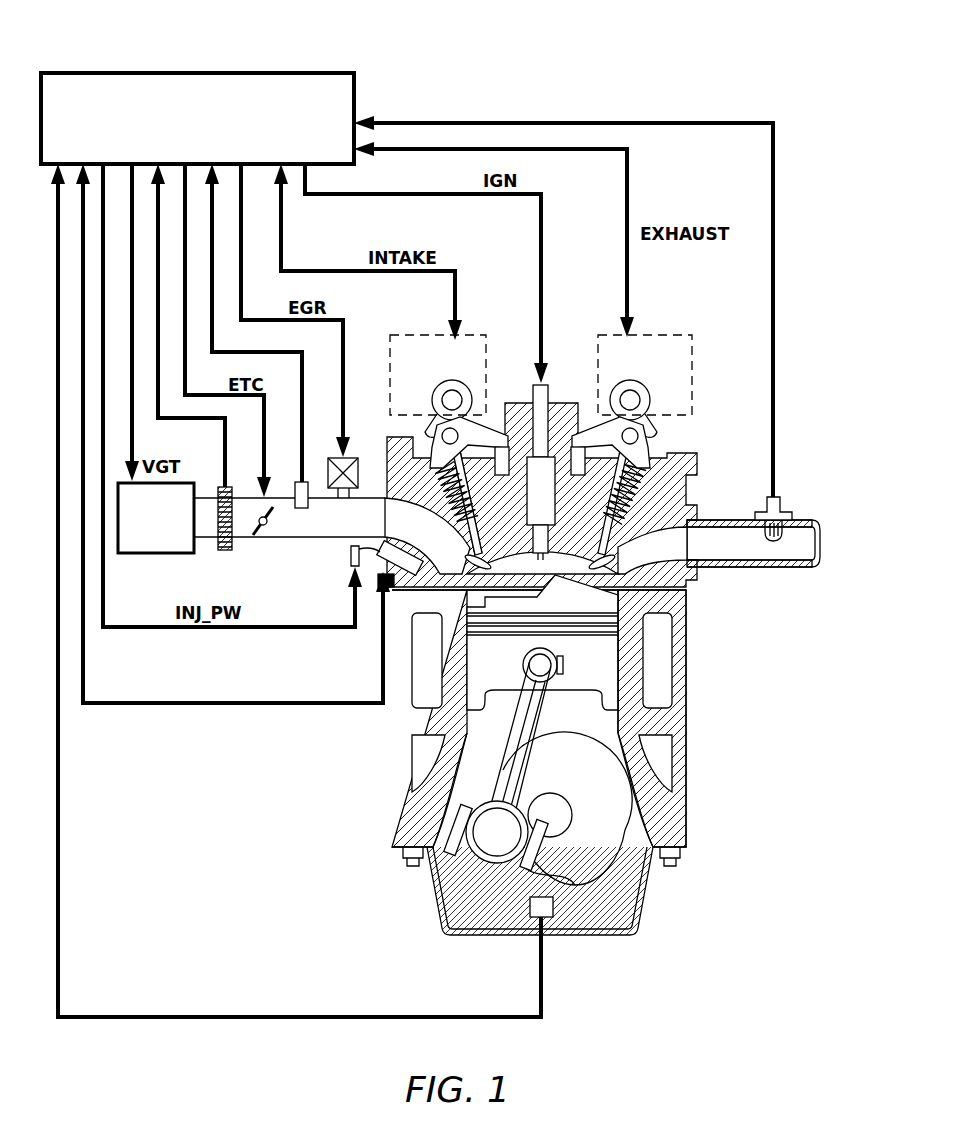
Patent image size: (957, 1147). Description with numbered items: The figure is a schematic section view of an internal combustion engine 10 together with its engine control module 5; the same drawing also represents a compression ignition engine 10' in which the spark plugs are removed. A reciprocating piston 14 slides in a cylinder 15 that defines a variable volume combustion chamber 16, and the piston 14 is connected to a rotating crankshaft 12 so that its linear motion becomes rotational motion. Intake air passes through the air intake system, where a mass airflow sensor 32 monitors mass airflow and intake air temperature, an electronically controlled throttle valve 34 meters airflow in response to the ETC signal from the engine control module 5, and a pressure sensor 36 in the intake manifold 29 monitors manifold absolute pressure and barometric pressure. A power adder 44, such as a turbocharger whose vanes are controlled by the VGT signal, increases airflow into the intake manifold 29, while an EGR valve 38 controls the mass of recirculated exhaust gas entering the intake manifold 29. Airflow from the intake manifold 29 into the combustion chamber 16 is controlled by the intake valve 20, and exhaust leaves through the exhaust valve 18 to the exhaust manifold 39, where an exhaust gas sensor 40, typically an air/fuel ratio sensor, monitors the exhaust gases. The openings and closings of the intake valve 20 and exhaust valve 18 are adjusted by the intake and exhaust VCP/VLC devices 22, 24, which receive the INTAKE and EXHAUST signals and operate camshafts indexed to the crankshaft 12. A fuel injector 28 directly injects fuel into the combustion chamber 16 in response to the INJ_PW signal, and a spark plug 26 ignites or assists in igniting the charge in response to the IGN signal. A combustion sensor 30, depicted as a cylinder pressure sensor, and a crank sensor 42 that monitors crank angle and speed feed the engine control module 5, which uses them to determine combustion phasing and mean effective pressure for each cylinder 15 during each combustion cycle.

The engine control module 5 is at (307, 70).
The internal combustion engine 10 is at (595, 669).
The compression ignition engine 10' is at (595, 669).
The crankshaft 12 is at (605, 872).
The piston 14 is at (600, 678).
The cylinder 15 is at (622, 606).
The combustion chamber 16 is at (520, 592).
The exhaust valve 18 is at (600, 552).
The intake valve 20 is at (458, 540).
The intake variable cam phasing/variable lift control device 22 is at (478, 342).
The exhaust variable cam phasing/variable lift control device 24 is at (680, 393).
The spark plug 26 is at (548, 385).
The fuel injector 28 is at (352, 567).
The intake manifold 29 is at (368, 505).
The combustion sensor 30 is at (378, 600).
The mass airflow sensor 32 is at (225, 550).
The throttle valve 34 is at (262, 540).
The pressure sensor 36 is at (300, 510).
The EGR valve 38 is at (338, 498).
The exhaust manifold 39 is at (680, 537).
The exhaust gas sensor 40 is at (776, 512).
The crank sensor 42 is at (532, 914).
The power adder 44 is at (150, 553).